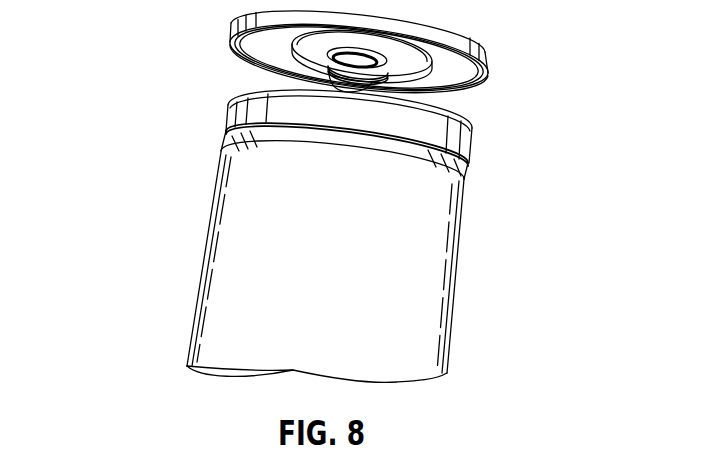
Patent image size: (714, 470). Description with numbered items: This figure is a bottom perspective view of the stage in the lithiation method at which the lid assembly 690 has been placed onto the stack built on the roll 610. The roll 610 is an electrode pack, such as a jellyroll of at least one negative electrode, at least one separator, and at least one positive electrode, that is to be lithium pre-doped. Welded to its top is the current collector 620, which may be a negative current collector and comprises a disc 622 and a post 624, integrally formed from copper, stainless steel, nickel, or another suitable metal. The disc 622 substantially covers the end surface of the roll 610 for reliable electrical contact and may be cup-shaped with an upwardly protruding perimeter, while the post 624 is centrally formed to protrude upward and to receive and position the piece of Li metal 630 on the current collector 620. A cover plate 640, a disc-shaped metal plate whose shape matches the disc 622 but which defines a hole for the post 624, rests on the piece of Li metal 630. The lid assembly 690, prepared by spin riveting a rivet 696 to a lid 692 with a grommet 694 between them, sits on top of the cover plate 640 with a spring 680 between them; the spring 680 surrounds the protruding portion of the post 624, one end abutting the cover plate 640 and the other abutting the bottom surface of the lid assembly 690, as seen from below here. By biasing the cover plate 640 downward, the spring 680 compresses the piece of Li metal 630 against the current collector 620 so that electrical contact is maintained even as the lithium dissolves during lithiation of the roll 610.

The roll 610 is at (217, 230).
The current collector 620 is at (266, 115).
The disc 622 is at (218, 147).
The post 624 is at (275, 73).
The piece of Li metal 630 is at (467, 156).
The cover plate 640 is at (472, 133).
The spring 680 is at (405, 98).
The lid assembly 690 is at (365, 63).
The lid 692 is at (433, 35).
The grommet 694 is at (422, 52).
The rivet 696 is at (427, 78).